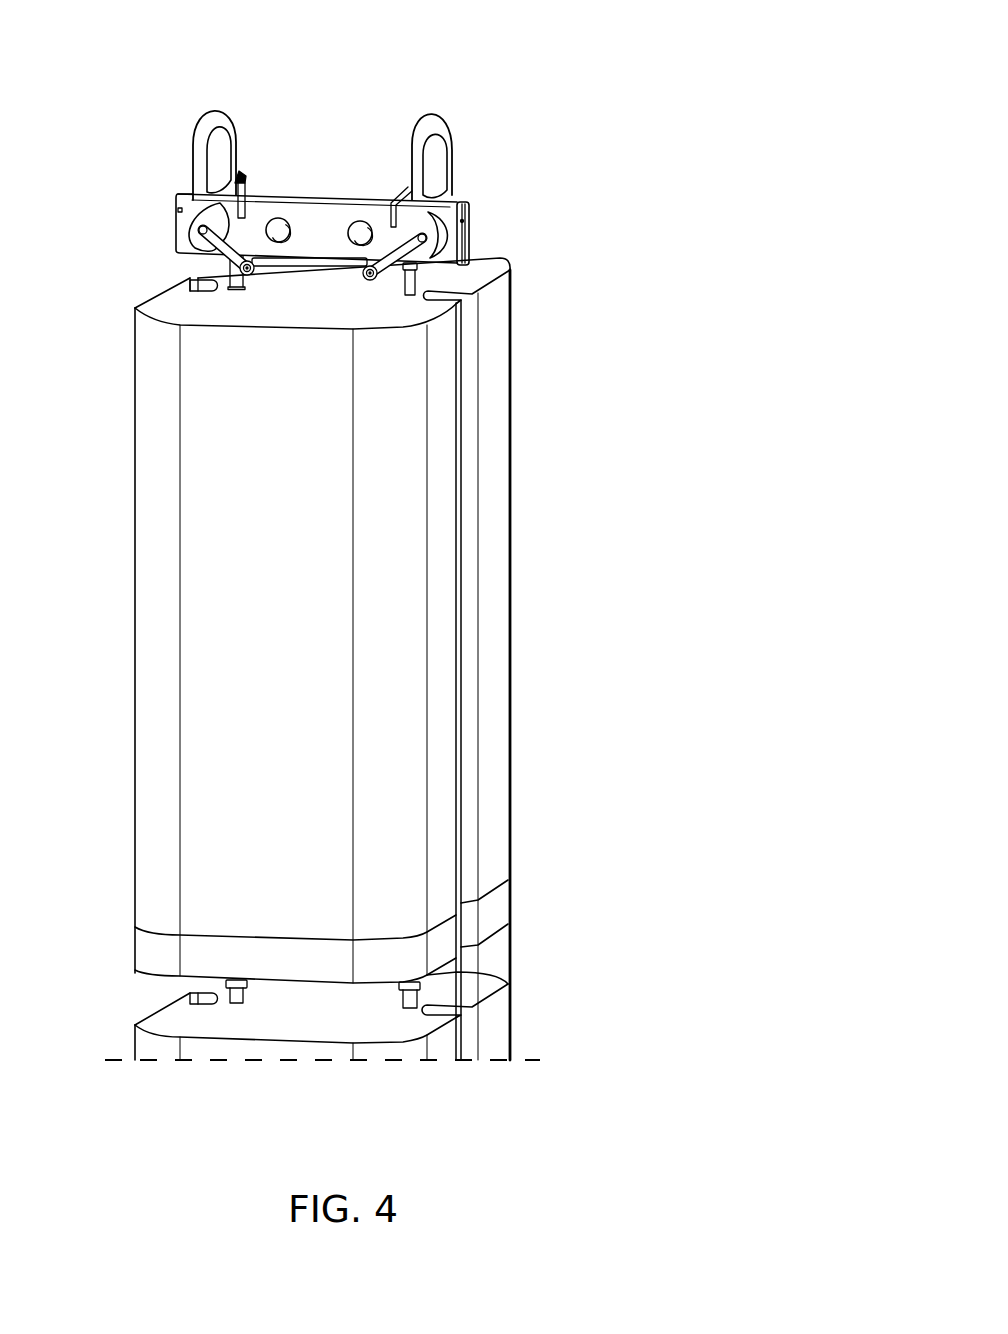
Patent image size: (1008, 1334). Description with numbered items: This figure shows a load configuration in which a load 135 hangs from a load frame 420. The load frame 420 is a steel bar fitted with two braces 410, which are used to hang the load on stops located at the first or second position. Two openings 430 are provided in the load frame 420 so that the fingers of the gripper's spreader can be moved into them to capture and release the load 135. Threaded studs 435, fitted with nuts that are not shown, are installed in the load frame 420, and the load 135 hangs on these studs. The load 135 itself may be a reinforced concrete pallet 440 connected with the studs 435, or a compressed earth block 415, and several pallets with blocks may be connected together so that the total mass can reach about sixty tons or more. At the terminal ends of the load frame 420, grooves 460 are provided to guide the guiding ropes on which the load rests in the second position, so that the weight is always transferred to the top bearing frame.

The load 135 is at (665, 95).
The brace 410 is at (427, 133).
The compressed earth block 415 is at (312, 623).
The load frame 420 is at (313, 233).
The opening 430 is at (357, 222).
The threaded stud 435 is at (418, 273).
The reinforced concrete pallet 440 is at (492, 917).
The groove 460 is at (186, 301).